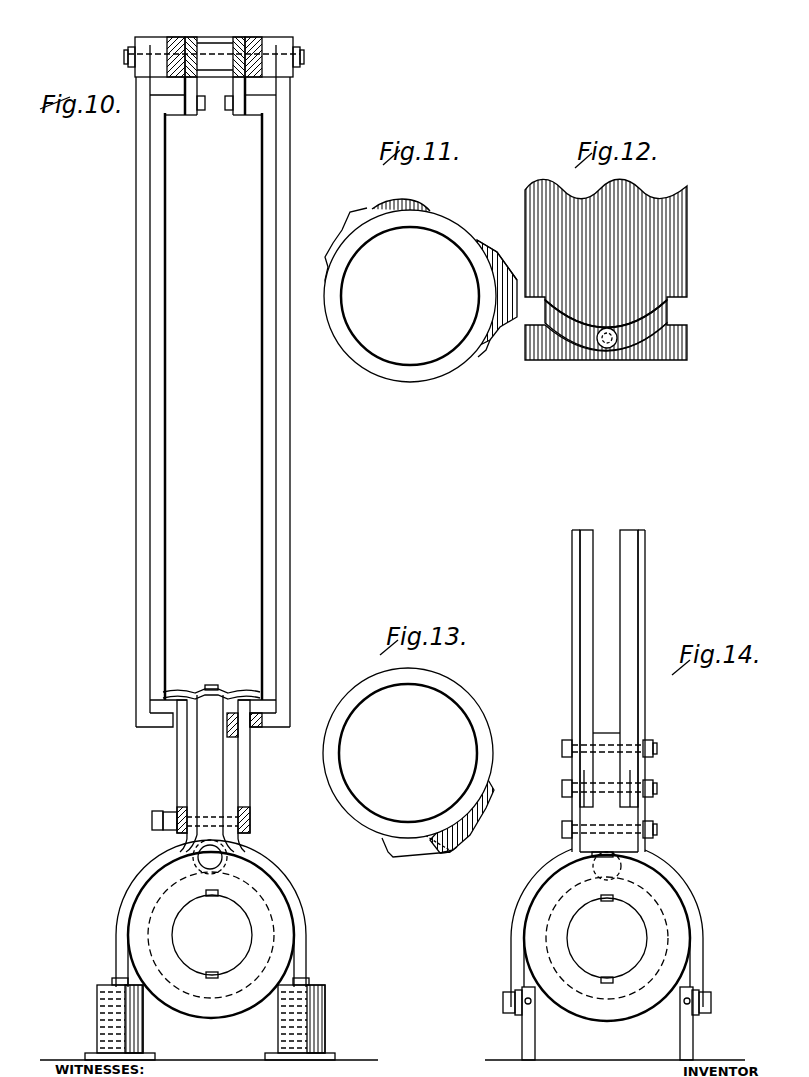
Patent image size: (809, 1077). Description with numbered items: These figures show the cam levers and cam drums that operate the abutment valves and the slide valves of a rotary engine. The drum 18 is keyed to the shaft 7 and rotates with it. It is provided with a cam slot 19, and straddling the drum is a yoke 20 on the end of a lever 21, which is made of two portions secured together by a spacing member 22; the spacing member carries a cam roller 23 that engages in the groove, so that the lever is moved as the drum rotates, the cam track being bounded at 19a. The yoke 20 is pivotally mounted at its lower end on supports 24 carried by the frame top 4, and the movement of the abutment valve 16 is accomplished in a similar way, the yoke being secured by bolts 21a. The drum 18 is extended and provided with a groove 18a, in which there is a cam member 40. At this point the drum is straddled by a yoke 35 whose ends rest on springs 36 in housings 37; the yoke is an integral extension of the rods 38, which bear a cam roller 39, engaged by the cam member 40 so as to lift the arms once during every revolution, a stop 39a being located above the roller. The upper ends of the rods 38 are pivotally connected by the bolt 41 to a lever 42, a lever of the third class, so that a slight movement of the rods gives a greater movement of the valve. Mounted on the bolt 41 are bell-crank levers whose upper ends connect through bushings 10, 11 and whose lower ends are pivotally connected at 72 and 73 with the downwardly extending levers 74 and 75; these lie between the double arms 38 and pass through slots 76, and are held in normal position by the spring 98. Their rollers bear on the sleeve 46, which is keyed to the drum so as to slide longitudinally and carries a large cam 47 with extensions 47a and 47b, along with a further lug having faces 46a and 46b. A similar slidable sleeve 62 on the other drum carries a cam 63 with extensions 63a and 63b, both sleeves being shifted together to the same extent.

In FIG. 10, the frame top 4 is at (203, 1063).
In FIG. 14, the frame top 4 is at (608, 1063).
In FIG. 10, the shaft 7 is at (212, 934).
In FIG. 14, the shaft 7 is at (607, 939).
In FIG. 10, the pivot bushing 10 is at (191, 36).
In FIG. 10, the pivot bushing 11 is at (239, 36).
In FIG. 12, the abutment valve 16 is at (590, 226).
In FIG. 10, the drum 18 is at (146, 903).
In FIG. 14, the drum 18 is at (670, 903).
In FIG. 10, the groove 18a is at (282, 919).
In FIG. 12, the cam slot 19 is at (668, 318).
In FIG. 14, the cam slot 19 is at (547, 920).
In FIG. 12, the saddle band upper edge 19a is at (606, 326).
In FIG. 14, the yoke 20 is at (698, 972).
In FIG. 14, the lever 21 is at (578, 637).
In FIG. 14, the bolts 21a is at (503, 1001).
In FIG. 14, the spacing member 22 is at (618, 822).
In FIG. 12, the cam roller 23 is at (607, 350).
In FIG. 14, the cam roller 23 is at (607, 872).
In FIG. 14, the supports 24 is at (527, 1030).
In FIG. 10, the yoke 35 is at (119, 946).
In FIG. 10, the springs 36 is at (142, 1026).
In FIG. 10, the housings 37 is at (97, 1019).
In FIG. 10, the rods 38 is at (137, 558).
In FIG. 10, the cam roller 39 is at (228, 853).
In FIG. 10, the stop 39a is at (207, 692).
In FIG. 10, the cam member 40 is at (152, 873).
In FIG. 10, the bolt 41 is at (126, 57).
In FIG. 10, the lever 42 is at (176, 37).
In FIG. 11, the sleeve 46 is at (498, 261).
In FIG. 11, the lug face 46a is at (474, 240).
In FIG. 11, the lug lower part 46b is at (496, 350).
In FIG. 11, the cam 47 is at (361, 221).
In FIG. 11, the cam extension 47a is at (412, 201).
In FIG. 11, the cam extension 47b is at (332, 242).
In FIG. 13, the slidable sleeve 62 is at (478, 708).
In FIG. 13, the cam 63 is at (458, 848).
In FIG. 13, the cam extension 63a is at (484, 818).
In FIG. 13, the cam extension 63b is at (423, 858).
In FIG. 10, the pivot connection 72 is at (201, 116).
In FIG. 10, the pivot connection 73 is at (223, 116).
In FIG. 10, the downwardly extending lever 74 is at (162, 441).
In FIG. 10, the downwardly extending lever 75 is at (260, 494).
In FIG. 10, the slots 76 is at (175, 728).
In FIG. 10, the spring 98 is at (232, 694).